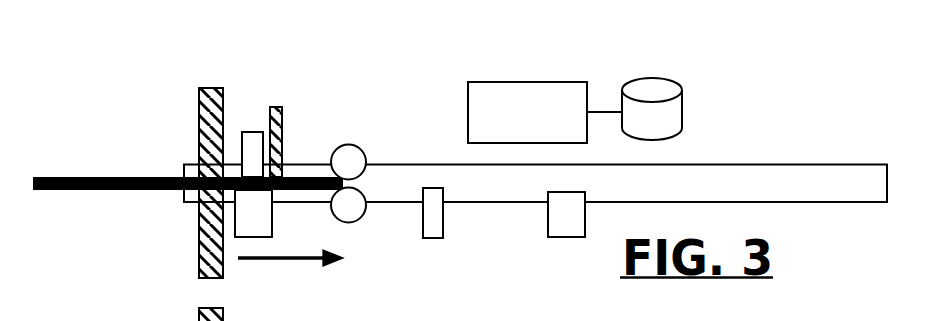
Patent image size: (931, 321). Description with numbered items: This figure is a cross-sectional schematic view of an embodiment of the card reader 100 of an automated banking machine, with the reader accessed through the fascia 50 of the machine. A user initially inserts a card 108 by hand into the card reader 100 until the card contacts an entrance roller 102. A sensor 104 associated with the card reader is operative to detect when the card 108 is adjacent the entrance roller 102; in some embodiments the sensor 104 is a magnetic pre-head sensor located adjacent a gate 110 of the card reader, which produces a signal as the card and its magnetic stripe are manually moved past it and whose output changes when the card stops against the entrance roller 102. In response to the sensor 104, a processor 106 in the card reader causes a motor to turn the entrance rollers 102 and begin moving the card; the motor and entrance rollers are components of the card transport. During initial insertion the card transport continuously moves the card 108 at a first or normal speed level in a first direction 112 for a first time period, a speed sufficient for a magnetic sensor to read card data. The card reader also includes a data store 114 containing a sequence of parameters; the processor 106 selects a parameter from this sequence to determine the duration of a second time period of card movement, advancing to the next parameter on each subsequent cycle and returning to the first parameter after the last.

The card reader 100 is at (763, 139).
The fascia 50 is at (208, 88).
The entrance roller 102 is at (350, 146).
The sensor 104 is at (275, 223).
The processor 106 is at (523, 82).
The card 108 is at (83, 173).
The gate 110 is at (277, 107).
The first direction 112 is at (295, 263).
The data store 114 is at (667, 78).